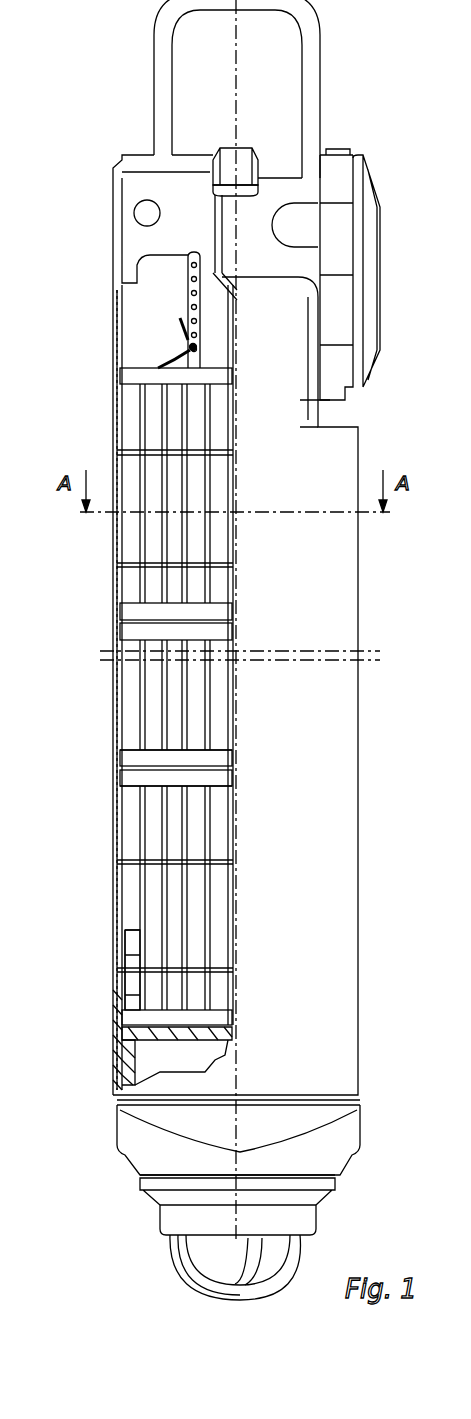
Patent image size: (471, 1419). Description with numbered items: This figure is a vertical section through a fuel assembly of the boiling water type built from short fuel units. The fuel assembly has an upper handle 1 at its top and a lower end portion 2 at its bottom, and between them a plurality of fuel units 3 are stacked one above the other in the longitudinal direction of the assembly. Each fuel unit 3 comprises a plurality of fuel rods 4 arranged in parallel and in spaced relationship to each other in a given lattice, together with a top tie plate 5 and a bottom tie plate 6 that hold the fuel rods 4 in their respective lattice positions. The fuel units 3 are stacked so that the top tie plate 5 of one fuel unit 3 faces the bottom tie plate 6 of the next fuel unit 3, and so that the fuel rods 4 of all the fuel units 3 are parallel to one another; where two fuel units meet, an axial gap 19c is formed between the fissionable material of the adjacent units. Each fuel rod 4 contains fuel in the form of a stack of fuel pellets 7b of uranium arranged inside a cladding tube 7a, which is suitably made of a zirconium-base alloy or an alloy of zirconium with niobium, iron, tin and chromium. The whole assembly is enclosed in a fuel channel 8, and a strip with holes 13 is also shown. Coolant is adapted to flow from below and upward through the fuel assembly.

The upper handle 1 is at (317, 70).
The lower end portion 2 is at (297, 1222).
The fuel unit 3 is at (117, 712).
The fuel rod 4 is at (130, 895).
The top tie plate 5 is at (120, 377).
The bottom tie plate 6 is at (222, 752).
The cladding tube 7a is at (120, 912).
The fuel pellets 7b is at (130, 978).
The fuel channel 8 is at (360, 762).
The strip with holes 13 is at (190, 262).
The axial gap 19c is at (105, 786).